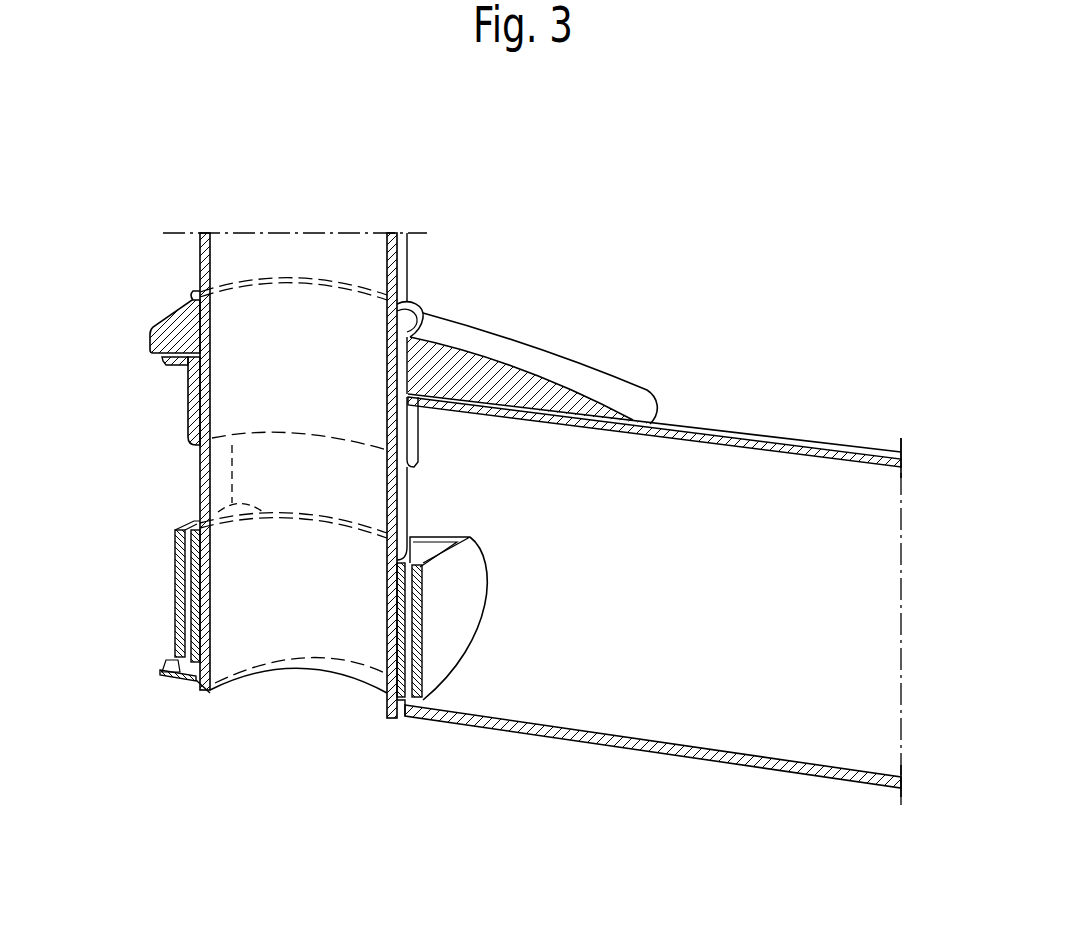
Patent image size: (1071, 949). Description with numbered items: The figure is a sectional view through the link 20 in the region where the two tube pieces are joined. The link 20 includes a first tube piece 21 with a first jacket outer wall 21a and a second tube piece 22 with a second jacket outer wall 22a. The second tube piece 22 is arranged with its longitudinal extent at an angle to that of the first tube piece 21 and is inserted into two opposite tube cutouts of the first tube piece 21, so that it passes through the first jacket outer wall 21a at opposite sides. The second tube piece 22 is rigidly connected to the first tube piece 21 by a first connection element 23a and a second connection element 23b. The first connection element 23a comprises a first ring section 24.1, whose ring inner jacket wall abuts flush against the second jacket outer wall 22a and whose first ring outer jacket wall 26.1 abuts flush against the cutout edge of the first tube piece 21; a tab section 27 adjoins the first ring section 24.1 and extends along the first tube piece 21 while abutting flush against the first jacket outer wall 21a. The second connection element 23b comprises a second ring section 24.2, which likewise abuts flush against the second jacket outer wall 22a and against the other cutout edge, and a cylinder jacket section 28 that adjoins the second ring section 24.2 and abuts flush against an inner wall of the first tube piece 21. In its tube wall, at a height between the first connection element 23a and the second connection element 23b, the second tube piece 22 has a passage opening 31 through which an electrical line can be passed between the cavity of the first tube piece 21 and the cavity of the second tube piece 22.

The link 20 is at (728, 307).
The first tube piece 21 is at (673, 753).
The first jacket outer wall 21a is at (737, 433).
The second tube piece 22 is at (197, 260).
The second jacket outer wall 22a is at (189, 479).
The first connection element 23a is at (546, 345).
The second connection element 23b is at (403, 718).
The first ring section 24.1 is at (195, 427).
The second ring section 24.2 is at (188, 683).
The first ring outer jacket wall 26.1 is at (178, 379).
The tab section 27 is at (588, 398).
The cylinder jacket section 28 is at (467, 650).
The passage opening 31 is at (310, 678).